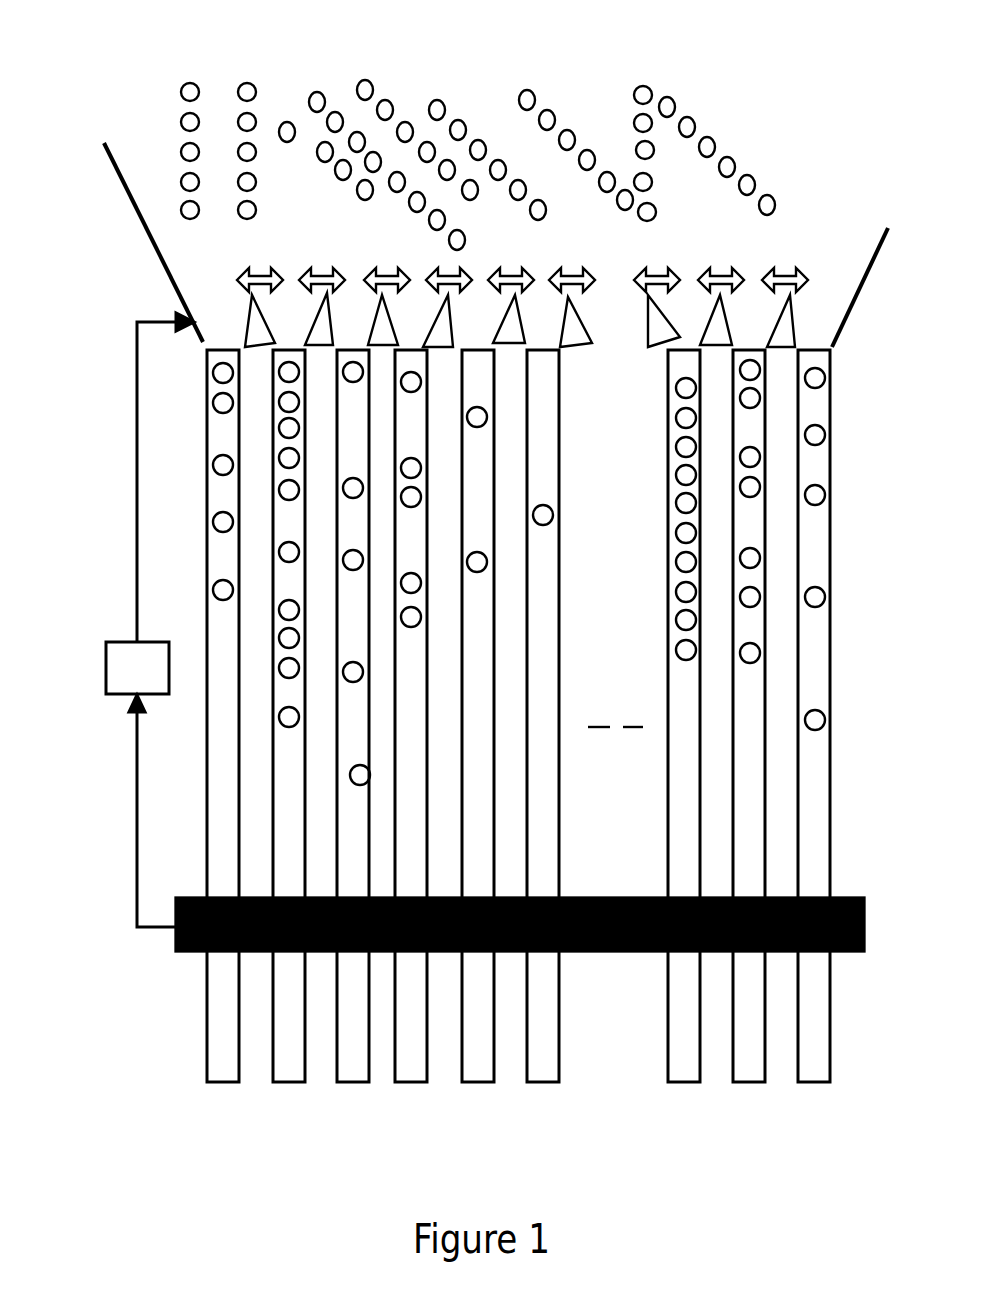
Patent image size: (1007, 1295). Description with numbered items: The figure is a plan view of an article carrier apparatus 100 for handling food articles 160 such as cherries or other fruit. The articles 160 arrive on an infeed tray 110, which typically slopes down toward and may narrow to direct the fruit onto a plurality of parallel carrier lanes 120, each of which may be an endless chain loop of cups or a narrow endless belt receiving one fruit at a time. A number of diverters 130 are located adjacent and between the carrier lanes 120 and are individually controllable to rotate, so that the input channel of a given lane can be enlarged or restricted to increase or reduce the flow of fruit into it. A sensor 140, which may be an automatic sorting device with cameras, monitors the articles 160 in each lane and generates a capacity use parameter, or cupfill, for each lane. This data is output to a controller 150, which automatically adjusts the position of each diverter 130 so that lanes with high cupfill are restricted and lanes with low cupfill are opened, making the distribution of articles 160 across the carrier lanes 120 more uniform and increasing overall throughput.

The article carrier apparatus 100 is at (615, 593).
The infeed tray 110 is at (137, 217).
The carrier lanes 120 is at (792, 1088).
The diverters 130 is at (650, 260).
The sensor 140 is at (180, 957).
The controller 150 is at (108, 695).
The articles 160 is at (182, 87).